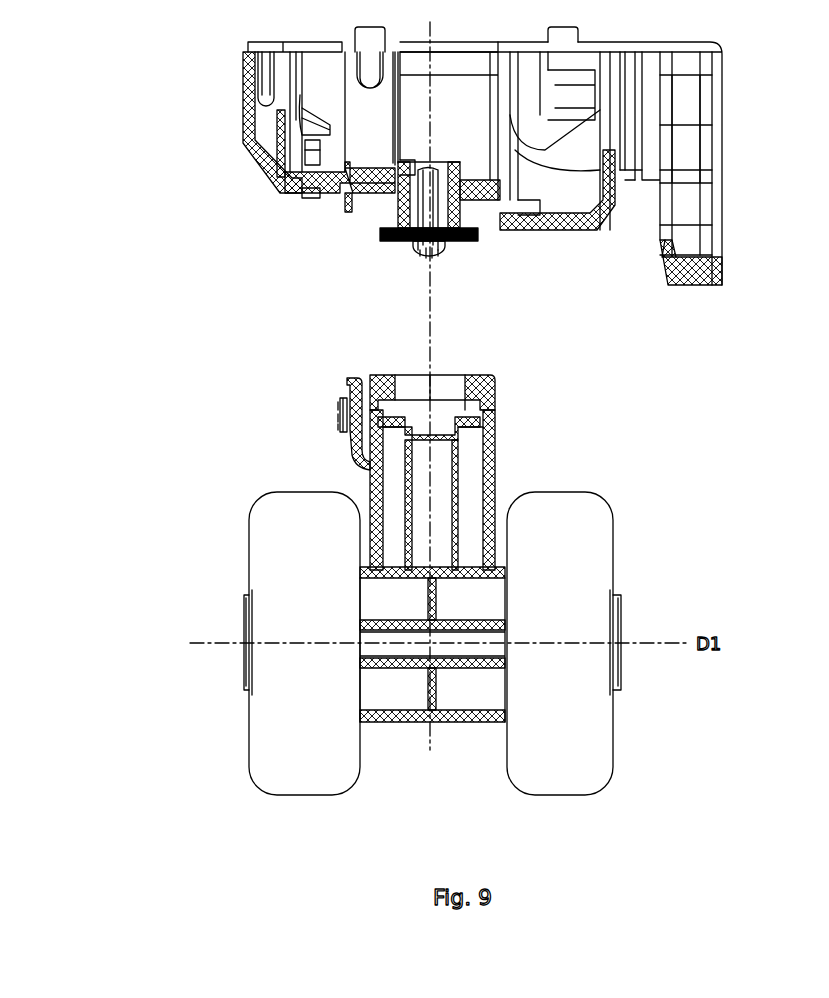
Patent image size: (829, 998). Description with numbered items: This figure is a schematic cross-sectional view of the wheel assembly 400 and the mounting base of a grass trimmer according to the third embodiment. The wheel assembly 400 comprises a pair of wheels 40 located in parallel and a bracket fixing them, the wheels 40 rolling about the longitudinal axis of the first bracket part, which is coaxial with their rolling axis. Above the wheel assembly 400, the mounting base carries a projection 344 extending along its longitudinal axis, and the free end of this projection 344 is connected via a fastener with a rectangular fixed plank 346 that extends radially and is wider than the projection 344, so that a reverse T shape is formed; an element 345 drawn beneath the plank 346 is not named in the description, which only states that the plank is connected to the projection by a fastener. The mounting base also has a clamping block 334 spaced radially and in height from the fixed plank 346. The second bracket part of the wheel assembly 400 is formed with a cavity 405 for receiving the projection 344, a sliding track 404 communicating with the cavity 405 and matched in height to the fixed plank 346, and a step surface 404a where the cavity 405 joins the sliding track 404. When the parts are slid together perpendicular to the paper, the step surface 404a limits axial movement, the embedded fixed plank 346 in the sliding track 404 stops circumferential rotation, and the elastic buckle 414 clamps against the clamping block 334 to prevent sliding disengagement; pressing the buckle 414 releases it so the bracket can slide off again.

The clamping block 334 is at (345, 205).
The mounting base projection 344 is at (398, 215).
The nut 345 is at (417, 250).
The rectangular fixed plank 346 is at (472, 243).
The wheel assembly 400 is at (207, 335).
The sliding track 404 is at (452, 420).
The step surface 404a is at (345, 428).
The cavity 405 is at (450, 387).
The buckle 414 is at (346, 384).
The wheels 40 is at (578, 560).